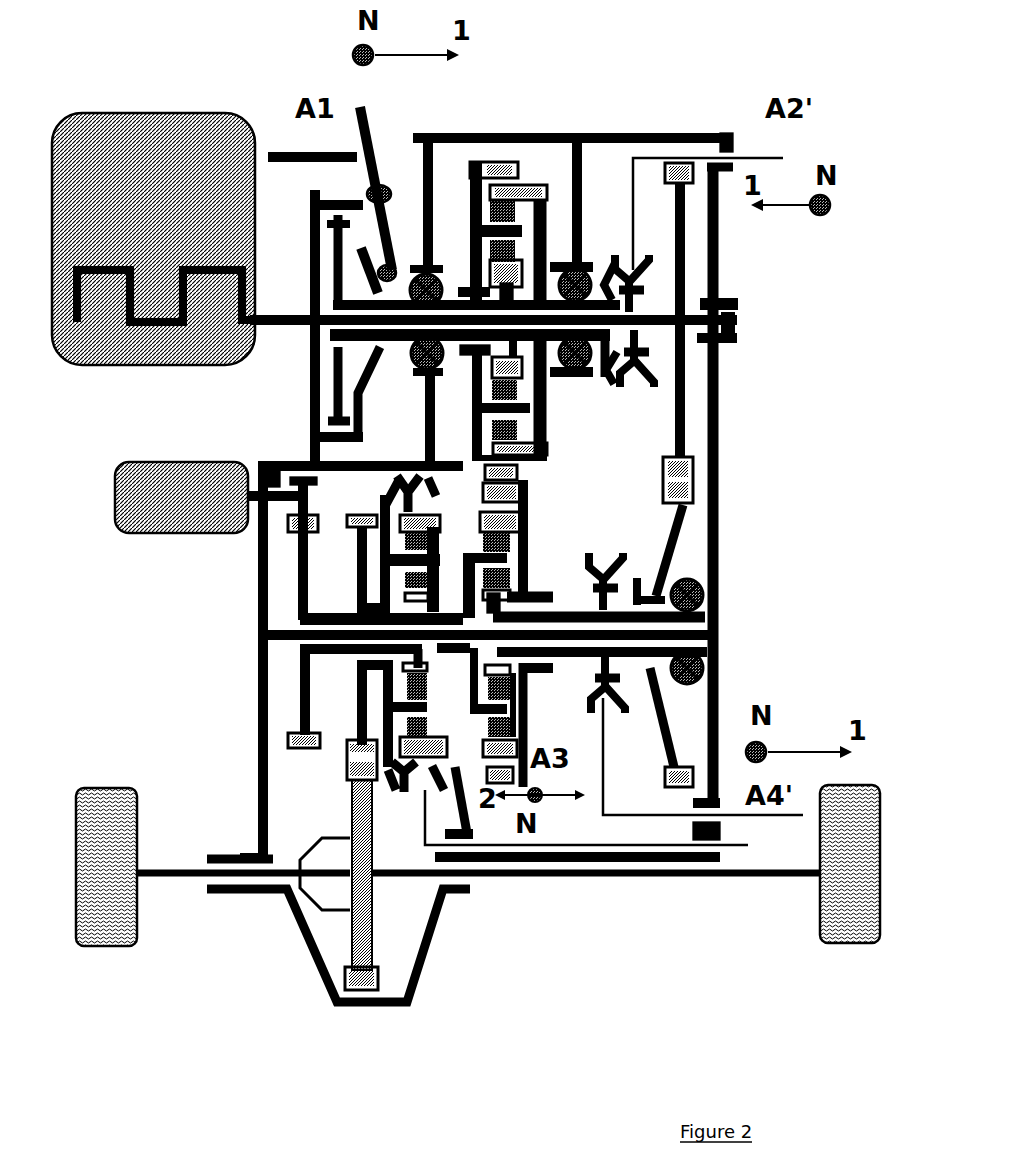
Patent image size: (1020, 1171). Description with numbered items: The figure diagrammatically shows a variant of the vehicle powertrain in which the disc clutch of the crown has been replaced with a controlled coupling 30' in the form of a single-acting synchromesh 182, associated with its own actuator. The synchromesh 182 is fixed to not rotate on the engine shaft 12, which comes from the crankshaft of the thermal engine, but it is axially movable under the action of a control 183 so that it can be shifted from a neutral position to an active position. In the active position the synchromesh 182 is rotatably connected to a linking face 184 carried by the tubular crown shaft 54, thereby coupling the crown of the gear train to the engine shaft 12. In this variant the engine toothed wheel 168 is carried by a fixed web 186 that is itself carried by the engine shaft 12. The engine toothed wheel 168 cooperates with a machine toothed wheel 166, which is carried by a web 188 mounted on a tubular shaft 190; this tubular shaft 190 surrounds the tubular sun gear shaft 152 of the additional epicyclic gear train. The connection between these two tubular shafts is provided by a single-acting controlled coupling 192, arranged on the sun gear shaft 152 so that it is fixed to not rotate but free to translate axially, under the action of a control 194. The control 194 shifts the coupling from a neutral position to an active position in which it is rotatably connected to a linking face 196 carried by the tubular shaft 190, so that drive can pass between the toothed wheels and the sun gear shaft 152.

The controlled coupling 30' is at (601, 194).
The crown shaft 54 is at (598, 298).
The control 183 is at (780, 157).
The fixed web 186 is at (685, 259).
The engine shaft 12 is at (697, 340).
The engine toothed wheel 168 is at (690, 463).
The machine toothed wheel 166 is at (690, 525).
The linking face 184 is at (603, 392).
The synchromesh 182 is at (628, 383).
The web 188 is at (663, 520).
The sun gear shaft 152 is at (585, 612).
The linking face 196 is at (647, 560).
The controlled coupling 192 is at (578, 724).
The tubular shaft 190 is at (653, 683).
The control 194 is at (780, 816).